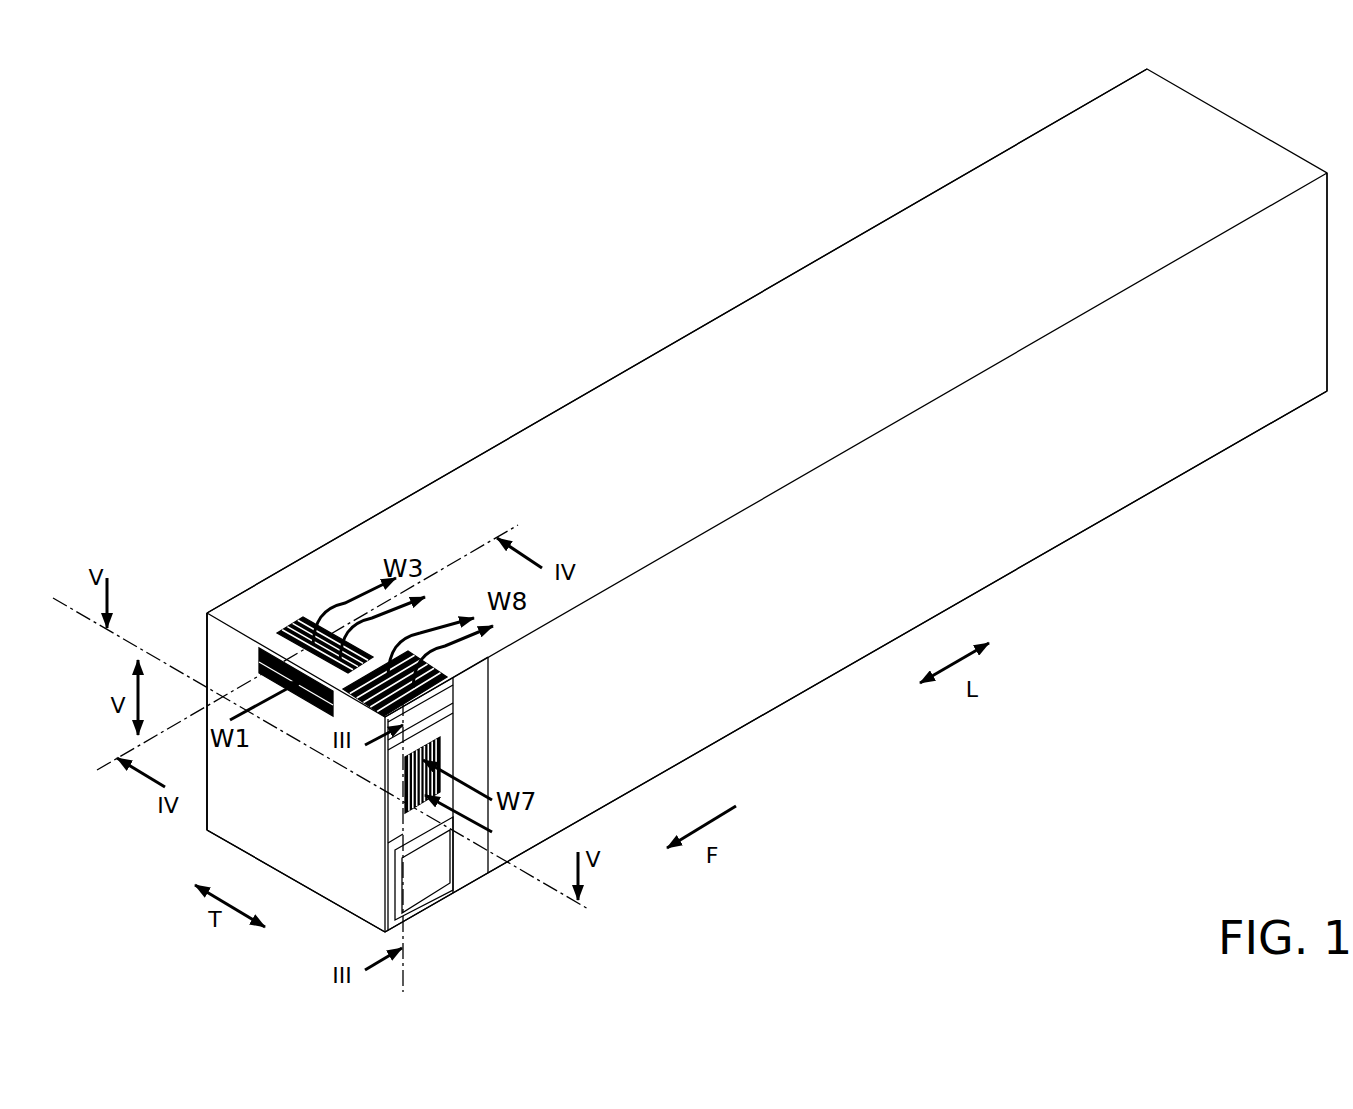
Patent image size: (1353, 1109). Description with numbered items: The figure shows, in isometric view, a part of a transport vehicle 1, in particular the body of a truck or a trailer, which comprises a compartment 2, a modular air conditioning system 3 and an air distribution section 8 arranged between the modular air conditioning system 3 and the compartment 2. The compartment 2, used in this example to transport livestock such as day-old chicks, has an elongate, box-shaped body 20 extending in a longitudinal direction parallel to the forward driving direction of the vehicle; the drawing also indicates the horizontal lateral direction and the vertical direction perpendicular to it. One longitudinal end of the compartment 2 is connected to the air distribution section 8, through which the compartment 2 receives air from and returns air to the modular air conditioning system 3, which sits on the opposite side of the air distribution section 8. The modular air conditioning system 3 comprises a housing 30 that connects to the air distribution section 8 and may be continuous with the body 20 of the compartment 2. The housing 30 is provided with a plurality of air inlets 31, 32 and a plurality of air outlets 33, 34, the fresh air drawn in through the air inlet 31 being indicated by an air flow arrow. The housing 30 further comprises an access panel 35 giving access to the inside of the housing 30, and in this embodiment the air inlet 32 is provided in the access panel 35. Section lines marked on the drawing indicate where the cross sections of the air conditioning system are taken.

The transport vehicle 1 is at (303, 382).
The compartment 2 is at (586, 411).
The box-shaped body 20 is at (797, 288).
The air distribution section 8 is at (303, 566).
The modular air conditioning system 3 is at (254, 599).
The housing 30 is at (207, 657).
The air inlet 31 is at (307, 703).
The air inlet 32 is at (410, 787).
The air outlet 33 is at (318, 628).
The air outlet 34 is at (446, 663).
The access panel 35 is at (447, 743).